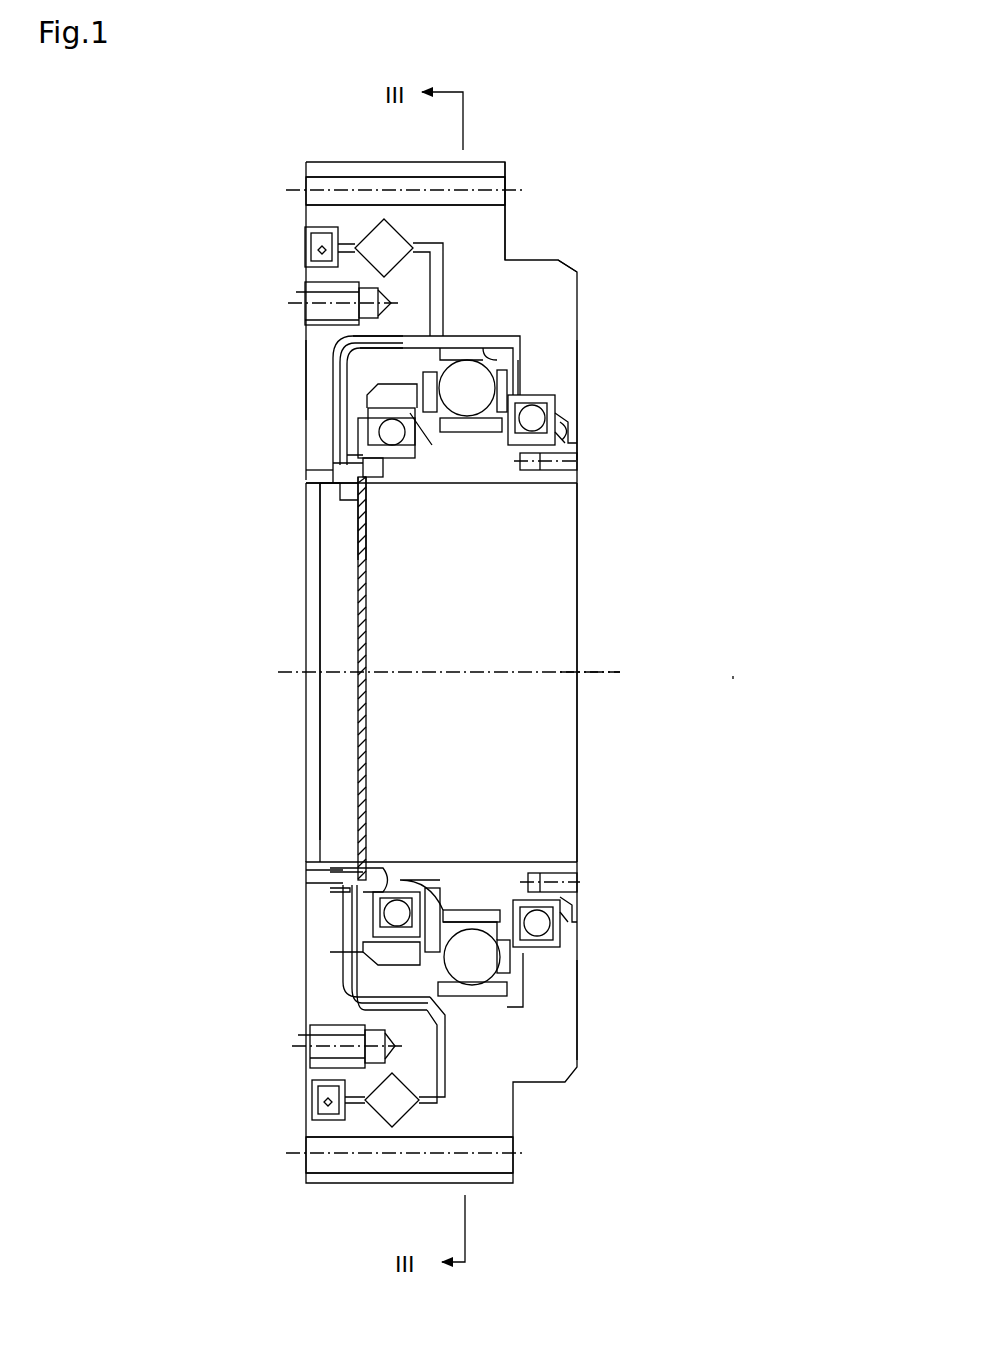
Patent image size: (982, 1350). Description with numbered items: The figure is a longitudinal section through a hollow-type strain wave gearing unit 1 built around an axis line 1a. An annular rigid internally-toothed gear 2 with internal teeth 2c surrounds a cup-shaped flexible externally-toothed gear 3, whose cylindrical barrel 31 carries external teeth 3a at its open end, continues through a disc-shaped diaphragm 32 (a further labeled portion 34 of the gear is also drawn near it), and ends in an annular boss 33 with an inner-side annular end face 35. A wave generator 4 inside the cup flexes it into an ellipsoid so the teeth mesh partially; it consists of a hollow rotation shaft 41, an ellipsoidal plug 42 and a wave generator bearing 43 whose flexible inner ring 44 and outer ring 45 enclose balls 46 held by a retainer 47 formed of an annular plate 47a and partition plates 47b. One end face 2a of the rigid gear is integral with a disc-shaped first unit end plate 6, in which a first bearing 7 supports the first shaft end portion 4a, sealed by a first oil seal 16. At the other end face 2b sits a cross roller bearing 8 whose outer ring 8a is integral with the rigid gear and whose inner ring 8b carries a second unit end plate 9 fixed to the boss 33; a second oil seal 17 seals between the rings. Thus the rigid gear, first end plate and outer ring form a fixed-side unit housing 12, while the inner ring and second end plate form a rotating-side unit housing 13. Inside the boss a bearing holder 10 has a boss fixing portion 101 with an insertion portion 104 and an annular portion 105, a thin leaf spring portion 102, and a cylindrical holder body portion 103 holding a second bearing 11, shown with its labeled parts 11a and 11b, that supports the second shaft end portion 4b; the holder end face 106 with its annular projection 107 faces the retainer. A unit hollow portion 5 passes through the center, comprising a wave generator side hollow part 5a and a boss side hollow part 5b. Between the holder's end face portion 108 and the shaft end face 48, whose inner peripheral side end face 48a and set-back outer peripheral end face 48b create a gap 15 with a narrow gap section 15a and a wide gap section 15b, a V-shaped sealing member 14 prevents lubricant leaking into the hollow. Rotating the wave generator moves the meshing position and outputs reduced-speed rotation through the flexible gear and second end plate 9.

The hollow-type strain wave gearing unit 1 is at (628, 190).
The axis line 1a is at (594, 668).
The rigid internally-toothed gear 2 is at (472, 312).
The one end face 2a is at (510, 223).
The other end face 2b is at (428, 333).
The internal teeth 2c is at (517, 360).
The flexible externally-toothed gear 3 is at (352, 300).
The external teeth 3a is at (480, 332).
The wave generator 4 is at (557, 372).
The first shaft end portion 4a is at (547, 483).
The second shaft end portion 4b is at (405, 490).
The unit hollow portion 5 is at (480, 650).
The wave generator side hollow part 5a is at (540, 608).
The boss side hollow part 5b is at (330, 641).
The first unit end plate 6 is at (578, 400).
The first bearing 7 is at (565, 402).
The cross roller bearing 8 is at (276, 110).
The outer ring 8a is at (370, 217).
The inner ring 8b is at (363, 273).
The second unit end plate 9 is at (310, 384).
The bearing holder 10 is at (350, 400).
The second bearing 11 is at (366, 433).
The bearing inner ring 11a is at (423, 413).
The bearing outer ring 11b is at (390, 460).
The unit housing on fixed side 12 is at (650, 1032).
The unit housing on rotating side 13 is at (208, 1043).
The sealing member 14 is at (376, 856).
The gap 15 is at (452, 596).
The annular gap section of minute width 15a is at (362, 482).
The annular gap section of wide width 15b is at (372, 478).
The first oil seal 16 is at (582, 440).
The second oil seal 17 is at (302, 248).
The cylindrical barrel 31 is at (350, 318).
The diaphragm 32 is at (347, 378).
The boss 33 is at (318, 473).
The bracket flange 34 is at (318, 478).
The inner-side annular end face 35 is at (352, 447).
The hollow rotation shaft 41 is at (500, 880).
The plug 42 is at (520, 885).
The wave generator bearing 43 is at (527, 953).
The inner ring 44 is at (542, 878).
The outer ring 45 is at (512, 993).
The balls 46 is at (564, 920).
The retainer 47 is at (555, 731).
The annular plate 47a is at (455, 950).
The partition plate 47b is at (478, 945).
The shaft end face 48 is at (212, 535).
The inner peripheral side end face 48a is at (357, 477).
The outer peripheral end face 48b is at (347, 477).
The boss fixing portion 101 is at (216, 843).
The leaf spring portion 102 is at (352, 907).
The holder body portion 103 is at (323, 977).
The insertion portion 104 is at (352, 866).
The annular portion 105 is at (352, 880).
The holder end face 106 is at (422, 945).
The annular projection 107 is at (430, 950).
The end face portion 108 is at (378, 872).